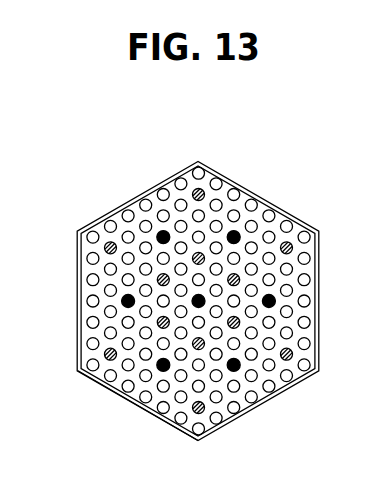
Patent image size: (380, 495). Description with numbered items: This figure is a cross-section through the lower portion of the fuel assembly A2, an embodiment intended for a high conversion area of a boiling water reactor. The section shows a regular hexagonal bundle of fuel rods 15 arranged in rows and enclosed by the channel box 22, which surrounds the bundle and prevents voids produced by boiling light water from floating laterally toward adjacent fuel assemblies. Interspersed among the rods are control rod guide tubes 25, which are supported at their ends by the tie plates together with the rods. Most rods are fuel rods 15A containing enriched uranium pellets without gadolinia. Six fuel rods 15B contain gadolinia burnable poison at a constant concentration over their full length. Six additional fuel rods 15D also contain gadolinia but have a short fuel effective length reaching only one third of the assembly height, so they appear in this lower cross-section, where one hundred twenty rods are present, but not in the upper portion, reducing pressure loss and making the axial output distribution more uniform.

The fuel rods 15 is at (90, 281).
The fuel rod 15A is at (163, 190).
The fuel rod containing gadolinia 15B is at (108, 243).
The fuel rod having short fuel effective length portion 15D is at (105, 355).
The control rod guide tube 25 is at (240, 232).
The channel box 22 is at (280, 395).
The fuel assembly A2 is at (115, 446).